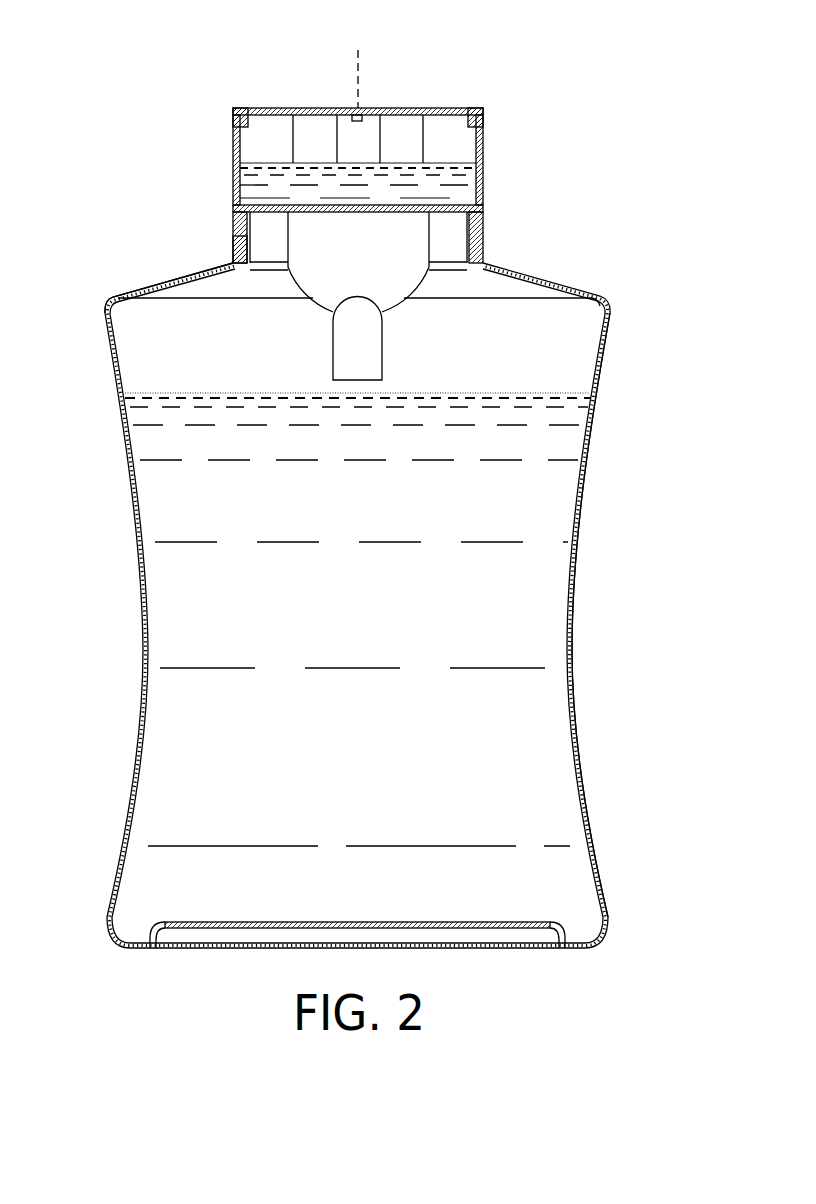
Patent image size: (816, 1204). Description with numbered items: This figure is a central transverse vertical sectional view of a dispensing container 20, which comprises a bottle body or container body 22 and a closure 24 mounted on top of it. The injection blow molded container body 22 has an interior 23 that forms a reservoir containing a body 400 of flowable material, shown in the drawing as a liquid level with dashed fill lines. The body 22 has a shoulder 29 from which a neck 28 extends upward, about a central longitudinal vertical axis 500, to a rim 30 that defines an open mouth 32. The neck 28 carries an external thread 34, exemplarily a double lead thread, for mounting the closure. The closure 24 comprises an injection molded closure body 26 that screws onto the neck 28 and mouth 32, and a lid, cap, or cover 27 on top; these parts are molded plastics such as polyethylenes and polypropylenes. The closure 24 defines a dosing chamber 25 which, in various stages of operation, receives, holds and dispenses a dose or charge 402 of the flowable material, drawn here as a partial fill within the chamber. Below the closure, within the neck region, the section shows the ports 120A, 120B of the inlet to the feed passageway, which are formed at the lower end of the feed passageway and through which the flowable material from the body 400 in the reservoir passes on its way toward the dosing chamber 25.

The container 20 is at (640, 300).
The container body 22 is at (588, 493).
The interior 23 is at (536, 282).
The closure 24 is at (518, 170).
The dosing chamber 25 is at (442, 177).
The closure body 26 is at (232, 148).
The cover 27 is at (226, 115).
The neck 28 is at (237, 223).
The shoulder 29 is at (120, 292).
The rim 30 is at (482, 209).
The open mouth 32 is at (446, 205).
The external thread 34 is at (237, 240).
The port 120A is at (404, 313).
The port 120B is at (316, 313).
The body of flowable material 400 is at (560, 442).
The charge 402 is at (386, 178).
The central longitudinal axis 500 is at (356, 90).